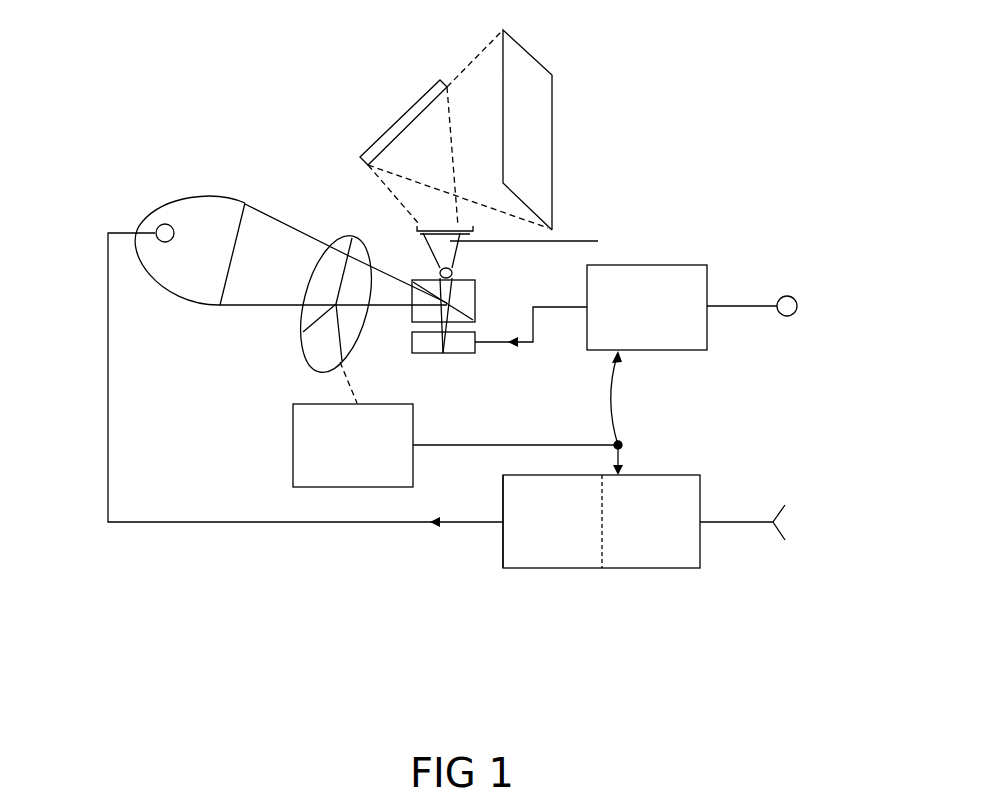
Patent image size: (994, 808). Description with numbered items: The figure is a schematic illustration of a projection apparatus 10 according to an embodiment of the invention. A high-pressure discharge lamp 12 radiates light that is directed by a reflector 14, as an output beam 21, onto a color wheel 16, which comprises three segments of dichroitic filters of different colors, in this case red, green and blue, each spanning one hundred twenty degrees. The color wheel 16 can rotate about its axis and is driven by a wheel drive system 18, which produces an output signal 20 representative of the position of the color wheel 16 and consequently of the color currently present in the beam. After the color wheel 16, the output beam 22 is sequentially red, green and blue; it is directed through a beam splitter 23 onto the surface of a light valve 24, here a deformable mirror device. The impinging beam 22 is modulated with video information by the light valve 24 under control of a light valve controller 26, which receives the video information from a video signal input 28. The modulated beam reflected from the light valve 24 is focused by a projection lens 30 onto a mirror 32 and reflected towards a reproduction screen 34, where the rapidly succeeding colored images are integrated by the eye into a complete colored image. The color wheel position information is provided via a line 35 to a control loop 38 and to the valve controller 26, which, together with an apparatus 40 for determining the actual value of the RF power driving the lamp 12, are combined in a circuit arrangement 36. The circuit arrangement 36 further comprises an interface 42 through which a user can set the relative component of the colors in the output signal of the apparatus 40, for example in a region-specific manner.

The projection apparatus 10 is at (314, 538).
The high-pressure discharge lamp 12 is at (158, 227).
The reflector 14 is at (193, 197).
The color wheel 16 is at (317, 275).
The wheel drive system 18 is at (385, 403).
The output signal 20 is at (417, 417).
The output beam 21 is at (283, 217).
The output beam 22 is at (393, 277).
The beam splitter 23 is at (462, 292).
The light valve 24 is at (473, 350).
The light valve controller 26 is at (670, 262).
The video signal input 28 is at (747, 302).
The projection lens 30 is at (551, 243).
The mirror 32 is at (400, 117).
The reproduction screen 34 is at (553, 135).
The line 35 is at (518, 441).
The circuit arrangement 36 is at (598, 588).
The control loop 38 is at (667, 483).
The apparatus for determining the actual value of the RF power 40 is at (523, 495).
The interface 42 is at (766, 525).